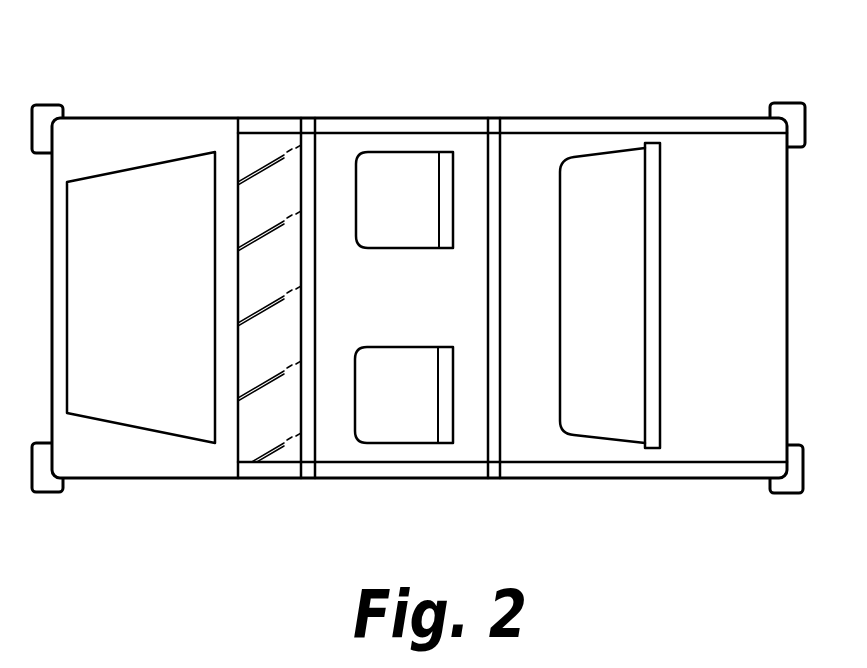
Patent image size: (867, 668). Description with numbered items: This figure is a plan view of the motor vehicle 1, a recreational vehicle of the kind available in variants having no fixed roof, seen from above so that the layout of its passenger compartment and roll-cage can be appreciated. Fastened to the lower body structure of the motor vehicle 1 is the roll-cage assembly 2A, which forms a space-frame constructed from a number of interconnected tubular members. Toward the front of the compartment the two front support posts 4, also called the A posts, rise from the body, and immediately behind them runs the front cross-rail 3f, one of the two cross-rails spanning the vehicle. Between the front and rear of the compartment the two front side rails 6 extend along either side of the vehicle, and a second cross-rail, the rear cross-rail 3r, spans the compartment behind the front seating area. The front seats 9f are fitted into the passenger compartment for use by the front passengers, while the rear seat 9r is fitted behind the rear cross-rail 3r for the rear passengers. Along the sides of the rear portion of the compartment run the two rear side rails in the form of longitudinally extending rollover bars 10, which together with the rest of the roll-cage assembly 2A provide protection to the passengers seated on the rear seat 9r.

The motor vehicle 1 is at (147, 100).
The front support posts 4 is at (262, 118).
The front cross-rail 3f is at (317, 155).
The front side rails 6 is at (388, 118).
The rear cross-rail 3r is at (483, 172).
The roll-cage assembly 2A is at (572, 118).
The rollover bars 10 is at (672, 118).
The front seats 9f is at (404, 297).
The rear seat 9r is at (610, 295).